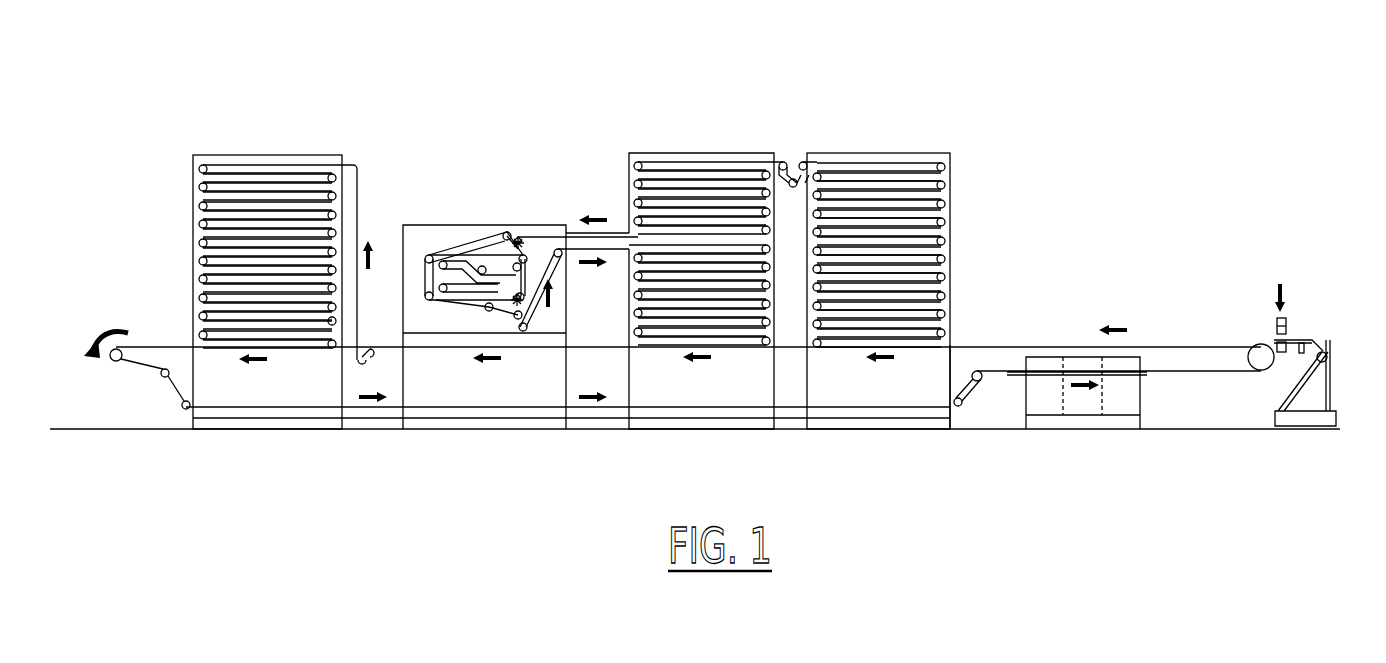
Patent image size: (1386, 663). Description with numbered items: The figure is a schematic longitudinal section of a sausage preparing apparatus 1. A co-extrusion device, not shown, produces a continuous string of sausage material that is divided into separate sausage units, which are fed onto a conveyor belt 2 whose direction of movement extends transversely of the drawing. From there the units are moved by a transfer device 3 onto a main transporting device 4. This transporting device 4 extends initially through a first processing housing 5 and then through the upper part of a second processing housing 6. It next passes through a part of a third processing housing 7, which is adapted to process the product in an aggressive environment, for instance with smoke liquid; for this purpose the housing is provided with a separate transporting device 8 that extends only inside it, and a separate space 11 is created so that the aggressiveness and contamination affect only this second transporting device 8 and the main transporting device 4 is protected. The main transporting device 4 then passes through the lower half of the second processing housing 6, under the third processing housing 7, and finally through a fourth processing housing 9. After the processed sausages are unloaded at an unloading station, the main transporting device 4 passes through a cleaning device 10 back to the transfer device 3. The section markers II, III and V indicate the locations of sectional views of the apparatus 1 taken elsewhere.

The sausage preparing apparatus 1 is at (1110, 135).
The conveyor belt 2 is at (1270, 342).
The transfer device 3 is at (1316, 341).
The transporting device 4 is at (1173, 343).
The first processing housing 5 is at (880, 152).
The second processing housing 6 is at (690, 148).
The third processing housing 7 is at (492, 223).
The separate transporting device 8 is at (468, 240).
The fourth processing housing 9 is at (248, 152).
The cleaning device 10 is at (1133, 396).
The separate space 11 is at (453, 287).
The section II is at (1298, 322).
The section III is at (950, 238).
The section V is at (447, 217).